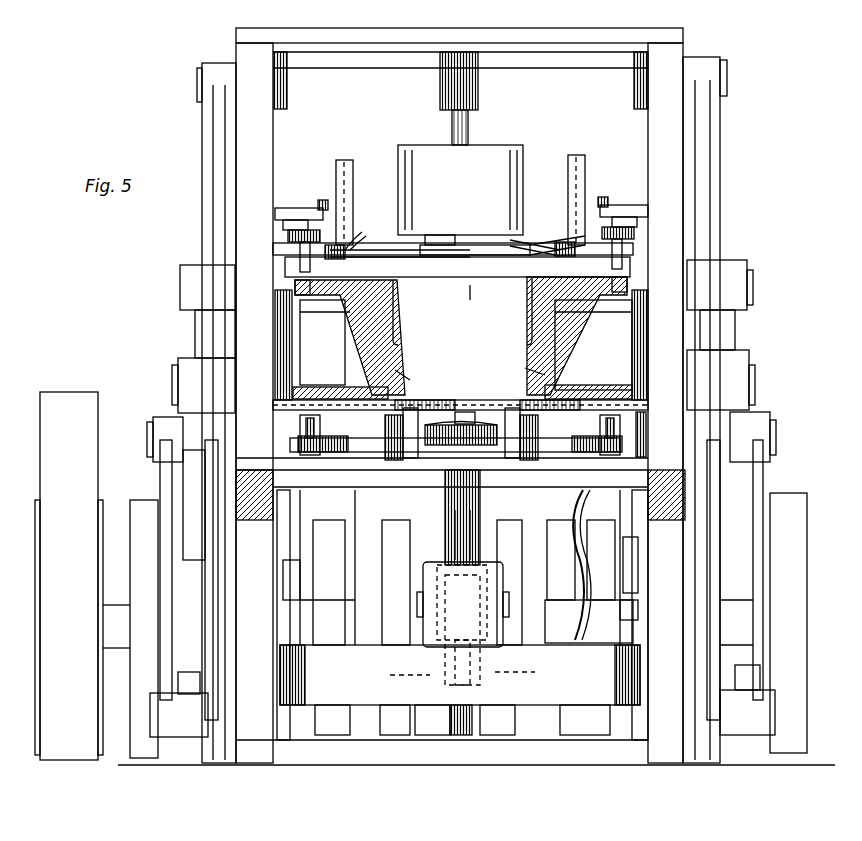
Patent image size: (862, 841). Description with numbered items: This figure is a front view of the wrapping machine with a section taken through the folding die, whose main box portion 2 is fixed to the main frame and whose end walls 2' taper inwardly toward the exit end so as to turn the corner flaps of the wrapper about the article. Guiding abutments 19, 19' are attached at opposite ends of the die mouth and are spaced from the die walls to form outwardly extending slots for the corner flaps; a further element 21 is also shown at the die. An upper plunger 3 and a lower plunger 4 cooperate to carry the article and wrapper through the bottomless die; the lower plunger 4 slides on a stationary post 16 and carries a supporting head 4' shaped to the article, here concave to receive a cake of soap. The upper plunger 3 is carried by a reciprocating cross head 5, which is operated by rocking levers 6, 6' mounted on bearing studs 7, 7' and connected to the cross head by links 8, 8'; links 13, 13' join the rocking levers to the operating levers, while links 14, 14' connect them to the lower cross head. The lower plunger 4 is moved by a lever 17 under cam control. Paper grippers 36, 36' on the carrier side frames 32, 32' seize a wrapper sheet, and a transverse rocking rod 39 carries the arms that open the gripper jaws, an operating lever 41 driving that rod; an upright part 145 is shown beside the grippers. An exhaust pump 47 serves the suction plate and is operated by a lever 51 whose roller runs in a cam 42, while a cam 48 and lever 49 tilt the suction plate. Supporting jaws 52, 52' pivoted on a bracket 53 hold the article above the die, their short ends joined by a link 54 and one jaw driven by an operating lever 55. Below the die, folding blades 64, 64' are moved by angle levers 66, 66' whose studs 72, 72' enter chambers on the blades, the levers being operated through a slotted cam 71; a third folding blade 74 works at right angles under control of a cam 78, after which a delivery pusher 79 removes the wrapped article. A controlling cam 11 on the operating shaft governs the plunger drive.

The main box portion 2 is at (528, 362).
The end walls 2' is at (404, 365).
The upper plunger 3 is at (408, 158).
The lower plunger 4 is at (445, 529).
The supporting head 4' is at (464, 397).
The cross head 5 is at (597, 72).
The rocking lever 6 is at (729, 305).
The rocking lever 6' is at (187, 311).
The bearing stud 7 is at (734, 380).
The bearing stud 7' is at (182, 379).
The link 8 is at (707, 410).
The link 8' is at (207, 413).
The controlling cam 11 is at (142, 533).
The link 13 is at (766, 556).
The link 13' is at (160, 558).
The link 14 is at (725, 580).
The link 14' is at (195, 580).
The stationary post 16 is at (468, 740).
The lever 17 is at (382, 730).
The guiding abutment 19 is at (555, 336).
The guiding abutment 19' is at (370, 337).
The spindle 21 is at (473, 296).
The side frame 32 is at (555, 216).
The side frame 32' is at (320, 214).
The paper gripper 36 is at (535, 231).
The paper gripper 36' is at (368, 231).
The transverse rocking rod 39 is at (340, 320).
The operating lever 41 is at (560, 551).
The cam 42 is at (612, 560).
The exhaust pump 47 is at (589, 621).
The cam 48 is at (329, 572).
The lever 49 is at (290, 535).
The lever 51 is at (628, 612).
The jaw 52 is at (637, 233).
The jaw 52' is at (284, 236).
The bracket 53 is at (432, 266).
The link 54 is at (473, 250).
The operating lever 55 is at (370, 568).
The folding blade 64 is at (588, 371).
The folding blade 64' is at (340, 375).
The angle lever 66 is at (597, 447).
The angle lever 66' is at (455, 451).
The slotted cam 71 is at (396, 572).
The stud 72 is at (652, 434).
The stud 72' is at (448, 423).
The third folding blade 74 is at (440, 395).
The cam 78 is at (509, 572).
The delivery pusher 79 is at (462, 517).
The rod 145 is at (582, 188).